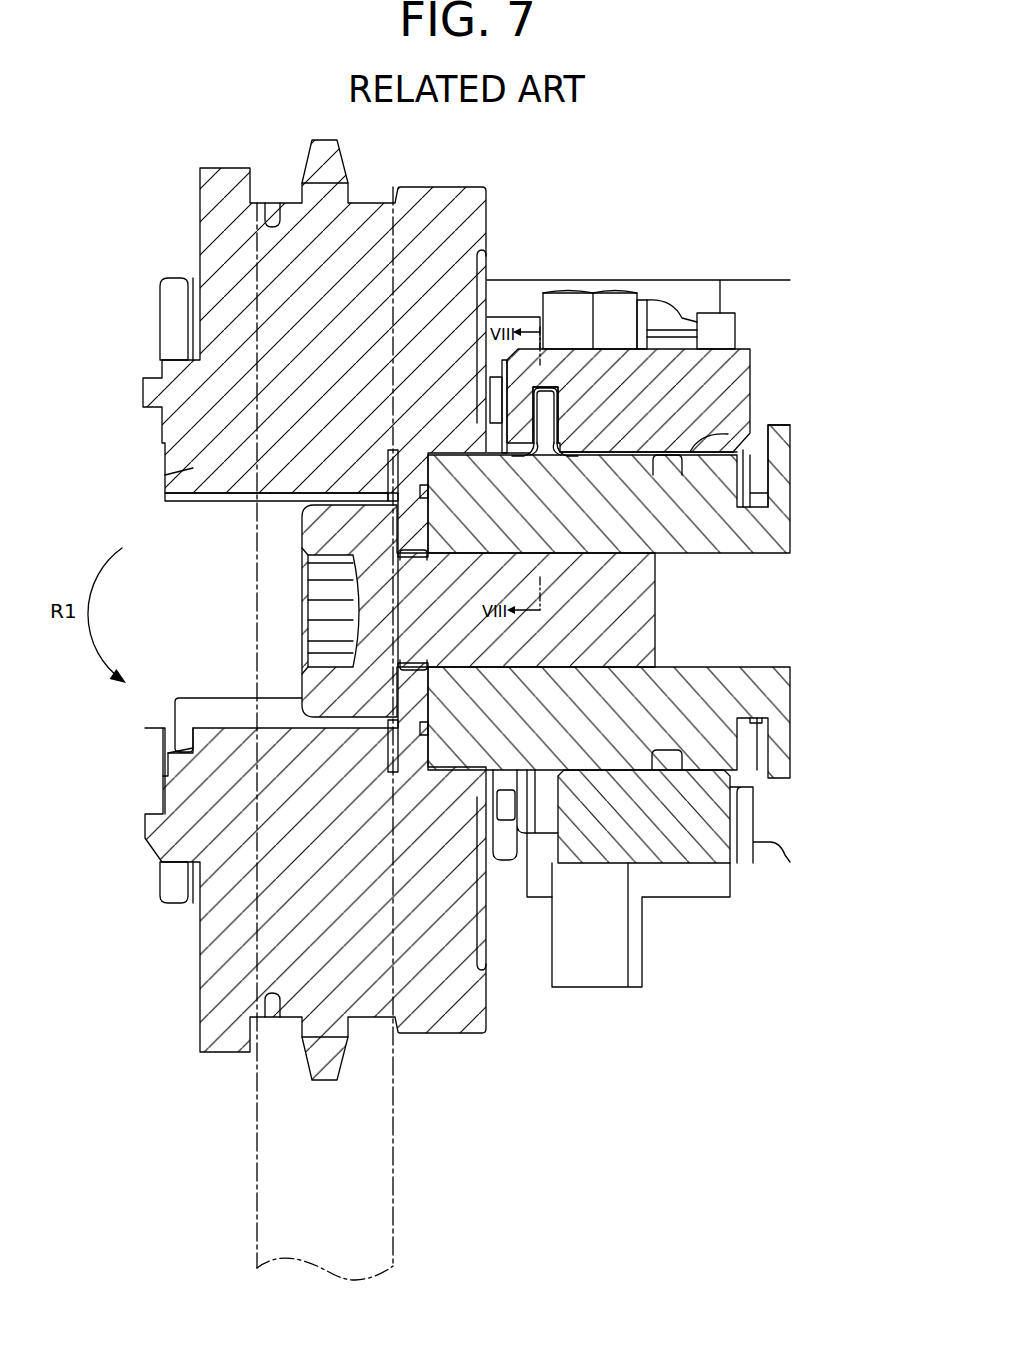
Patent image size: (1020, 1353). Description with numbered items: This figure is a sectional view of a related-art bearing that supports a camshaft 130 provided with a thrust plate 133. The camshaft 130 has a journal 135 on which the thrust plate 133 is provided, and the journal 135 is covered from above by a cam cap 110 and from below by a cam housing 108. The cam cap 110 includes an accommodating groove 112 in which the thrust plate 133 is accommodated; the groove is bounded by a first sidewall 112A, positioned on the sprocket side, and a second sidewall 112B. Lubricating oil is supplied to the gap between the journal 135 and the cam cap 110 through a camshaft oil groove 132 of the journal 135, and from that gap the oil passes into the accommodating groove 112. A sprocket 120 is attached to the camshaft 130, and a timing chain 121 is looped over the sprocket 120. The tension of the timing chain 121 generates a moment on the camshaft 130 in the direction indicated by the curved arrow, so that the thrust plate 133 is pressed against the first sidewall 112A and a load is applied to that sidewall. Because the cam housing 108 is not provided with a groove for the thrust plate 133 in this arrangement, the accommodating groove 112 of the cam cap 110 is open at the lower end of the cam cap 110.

The cam housing 108 is at (680, 855).
The cam cap 110 is at (663, 347).
The accommodating groove 112 is at (538, 385).
The first sidewall 112A is at (531, 450).
The second sidewall 112B is at (553, 450).
The sprocket 120 is at (205, 228).
The timing chain 121 is at (258, 1167).
The camshaft 130 is at (772, 690).
The camshaft oil groove 132 is at (672, 468).
The thrust plate 133 is at (548, 423).
The journal 135 is at (768, 433).